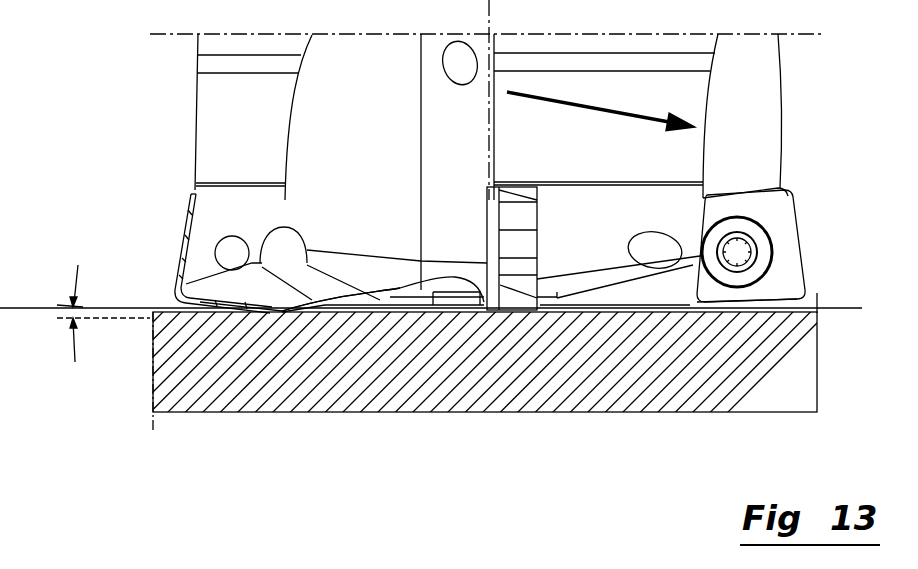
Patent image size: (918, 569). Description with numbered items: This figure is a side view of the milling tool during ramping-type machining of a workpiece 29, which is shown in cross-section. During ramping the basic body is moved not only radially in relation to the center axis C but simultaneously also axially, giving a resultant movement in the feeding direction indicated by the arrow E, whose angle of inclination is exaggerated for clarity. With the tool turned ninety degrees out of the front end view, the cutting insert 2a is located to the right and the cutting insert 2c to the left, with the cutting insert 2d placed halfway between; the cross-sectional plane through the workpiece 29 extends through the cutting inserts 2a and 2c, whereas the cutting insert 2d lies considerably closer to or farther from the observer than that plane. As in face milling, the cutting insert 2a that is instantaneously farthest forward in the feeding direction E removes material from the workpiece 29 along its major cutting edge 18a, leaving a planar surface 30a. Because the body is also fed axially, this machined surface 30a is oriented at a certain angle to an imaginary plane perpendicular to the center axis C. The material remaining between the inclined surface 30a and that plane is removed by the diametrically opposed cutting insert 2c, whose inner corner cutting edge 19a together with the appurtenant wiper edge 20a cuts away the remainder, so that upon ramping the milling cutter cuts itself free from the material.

The cutting insert 2a is at (803, 232).
The cutting insert 2c is at (177, 208).
The cutting insert 2d is at (545, 227).
The major cutting edge 18a is at (735, 309).
The inner corner cutting edge 19a is at (284, 313).
The wiper edge 20a is at (283, 313).
The workpiece 29 is at (508, 403).
The planar surface 30a is at (643, 312).
The center axis C is at (487, 124).
The arrow indicating feeding direction E is at (595, 108).